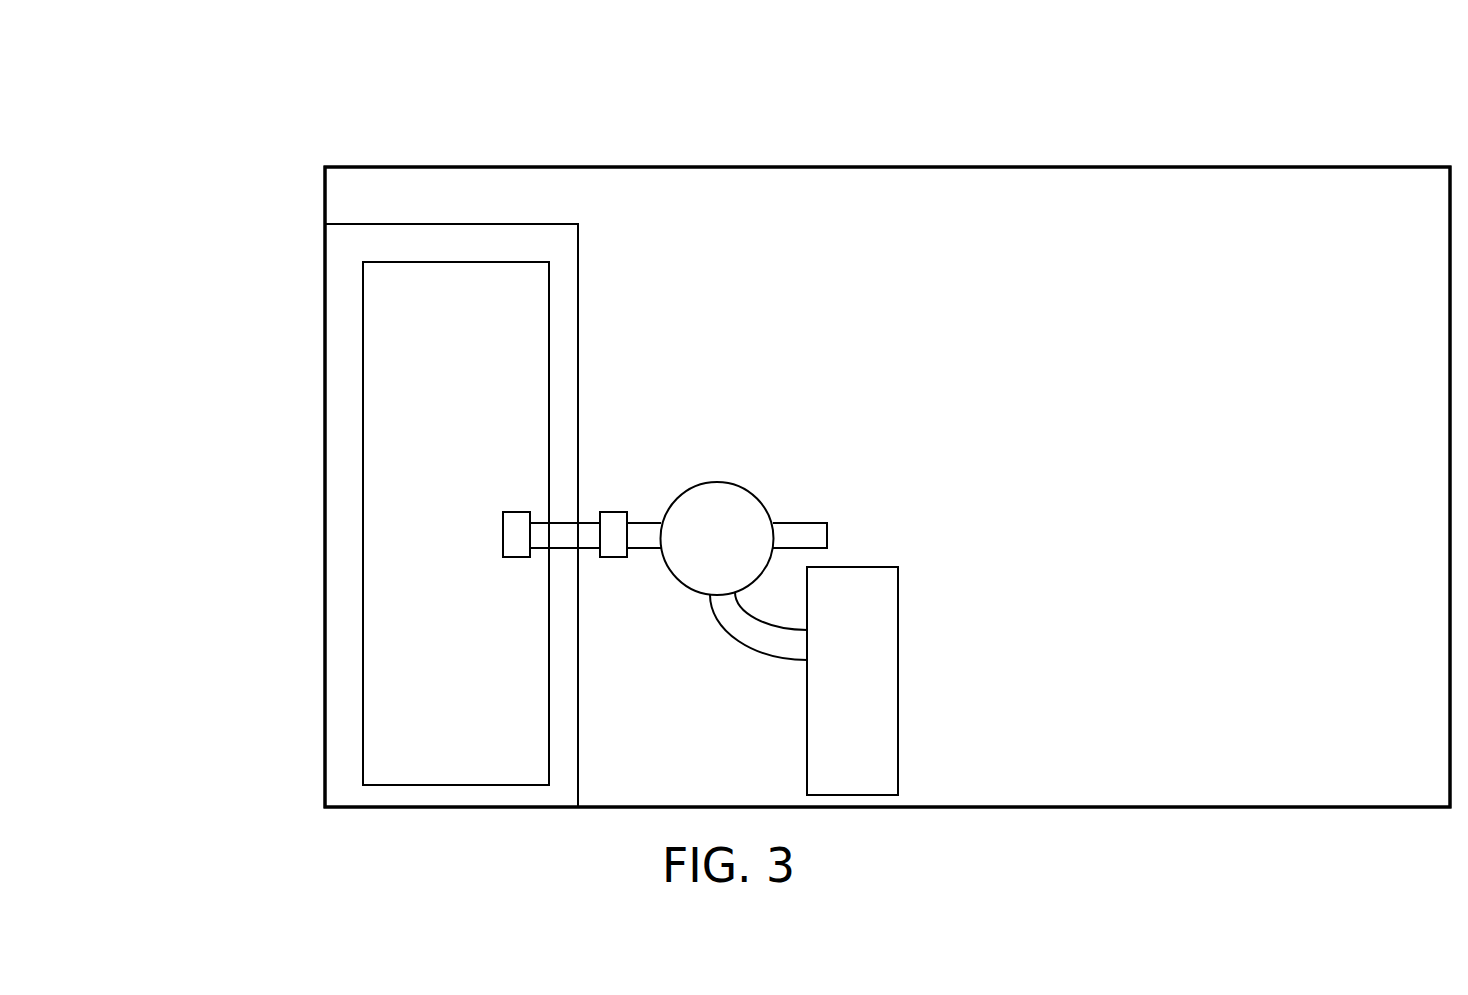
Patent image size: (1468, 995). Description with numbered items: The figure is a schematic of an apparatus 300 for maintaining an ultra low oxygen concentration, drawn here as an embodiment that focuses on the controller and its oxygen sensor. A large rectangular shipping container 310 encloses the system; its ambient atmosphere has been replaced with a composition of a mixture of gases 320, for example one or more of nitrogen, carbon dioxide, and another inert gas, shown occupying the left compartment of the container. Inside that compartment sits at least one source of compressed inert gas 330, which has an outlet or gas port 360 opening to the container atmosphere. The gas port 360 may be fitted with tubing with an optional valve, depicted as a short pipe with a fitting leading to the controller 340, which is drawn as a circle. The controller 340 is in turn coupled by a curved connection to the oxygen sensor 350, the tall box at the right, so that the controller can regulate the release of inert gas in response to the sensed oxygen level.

The apparatus 300 is at (1273, 118).
The shipping container 310 is at (887, 167).
The composition of a mixture of gases 320 is at (403, 187).
The source of compressed inert gas 330 is at (528, 451).
The controller 340 is at (760, 492).
The oxygen sensor 350 is at (898, 681).
The gas port 360 is at (567, 548).